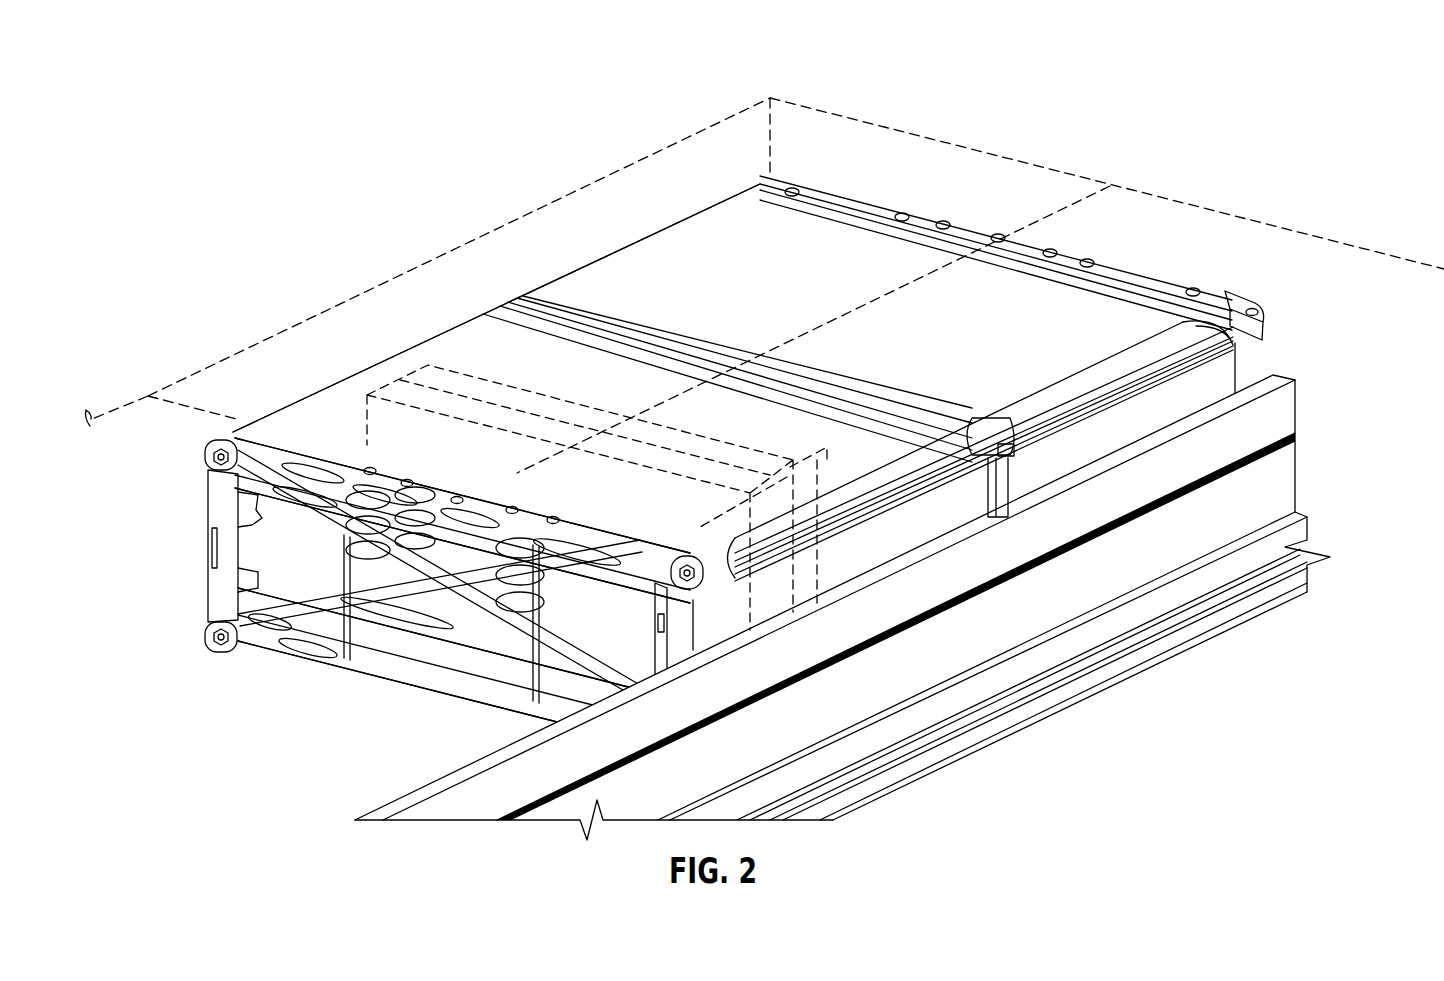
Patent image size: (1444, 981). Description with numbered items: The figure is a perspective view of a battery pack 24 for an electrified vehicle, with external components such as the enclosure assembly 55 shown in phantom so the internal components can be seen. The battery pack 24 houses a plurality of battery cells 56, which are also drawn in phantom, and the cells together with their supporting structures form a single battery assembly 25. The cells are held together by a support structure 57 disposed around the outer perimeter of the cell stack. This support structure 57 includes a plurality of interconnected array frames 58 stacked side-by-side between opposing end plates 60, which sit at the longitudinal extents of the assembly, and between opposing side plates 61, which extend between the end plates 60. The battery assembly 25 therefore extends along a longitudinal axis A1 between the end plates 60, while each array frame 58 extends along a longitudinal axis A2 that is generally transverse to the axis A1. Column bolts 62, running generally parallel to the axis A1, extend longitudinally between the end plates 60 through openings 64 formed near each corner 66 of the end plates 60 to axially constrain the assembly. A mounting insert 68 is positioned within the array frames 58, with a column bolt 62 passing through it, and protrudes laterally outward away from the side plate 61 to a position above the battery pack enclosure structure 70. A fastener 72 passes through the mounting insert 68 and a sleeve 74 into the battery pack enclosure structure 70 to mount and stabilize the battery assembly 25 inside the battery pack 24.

The battery pack 24 is at (978, 98).
The battery assembly 25 is at (668, 220).
The enclosure assembly 55 is at (1170, 194).
The battery cells 56 is at (510, 418).
The support structure 57 is at (352, 370).
The array frames 58 is at (767, 177).
The end plates 60 is at (1143, 268).
The side plates 61 is at (420, 344).
The column bolts 62 is at (214, 463).
The openings 64 is at (250, 530).
The corners 66 is at (202, 468).
The mounting insert 68 is at (990, 430).
The battery pack enclosure structure 70 is at (1013, 630).
The fastener 72 is at (1020, 444).
The sleeve 74 is at (1012, 496).
The longitudinal axis A1 is at (1068, 208).
The longitudinal axis A2 is at (218, 414).